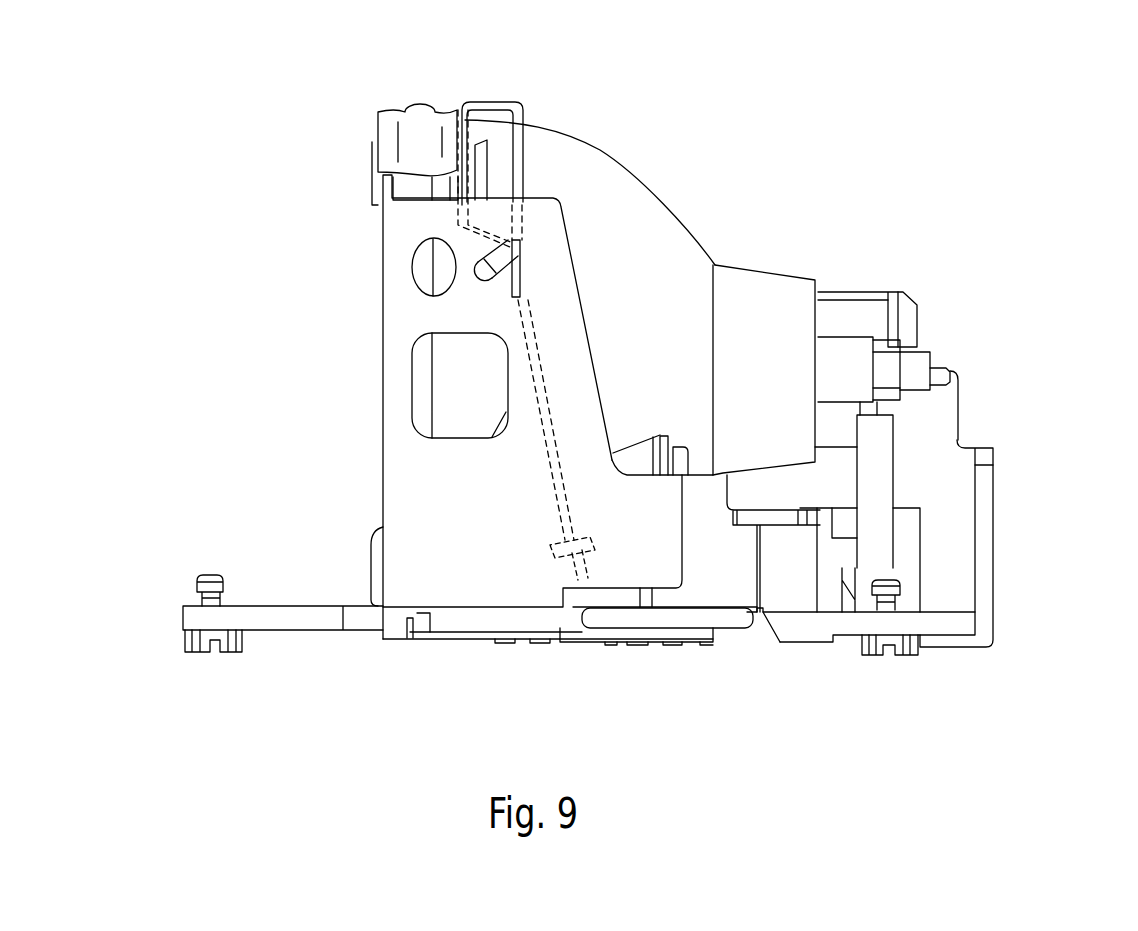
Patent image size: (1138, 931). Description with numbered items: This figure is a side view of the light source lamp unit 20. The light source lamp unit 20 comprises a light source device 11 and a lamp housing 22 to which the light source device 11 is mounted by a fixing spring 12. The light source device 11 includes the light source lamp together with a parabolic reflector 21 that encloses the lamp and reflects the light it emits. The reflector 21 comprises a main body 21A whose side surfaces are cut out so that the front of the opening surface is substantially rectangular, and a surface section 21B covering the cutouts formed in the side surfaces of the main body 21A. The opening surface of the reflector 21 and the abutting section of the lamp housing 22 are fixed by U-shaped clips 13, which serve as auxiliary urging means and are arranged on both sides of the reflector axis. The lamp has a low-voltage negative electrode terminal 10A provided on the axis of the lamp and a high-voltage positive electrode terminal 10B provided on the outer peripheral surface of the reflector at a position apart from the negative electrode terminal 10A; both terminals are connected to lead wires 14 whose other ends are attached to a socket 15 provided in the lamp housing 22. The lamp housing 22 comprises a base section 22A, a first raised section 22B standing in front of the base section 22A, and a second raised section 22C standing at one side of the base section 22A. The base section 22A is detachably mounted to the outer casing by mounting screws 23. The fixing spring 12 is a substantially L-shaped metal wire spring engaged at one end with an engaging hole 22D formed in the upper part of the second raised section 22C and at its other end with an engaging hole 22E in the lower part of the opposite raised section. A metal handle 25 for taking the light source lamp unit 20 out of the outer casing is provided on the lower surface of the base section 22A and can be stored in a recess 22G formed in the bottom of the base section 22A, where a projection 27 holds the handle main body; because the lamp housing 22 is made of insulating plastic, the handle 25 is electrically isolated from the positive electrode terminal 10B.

The light source lamp unit 20 is at (289, 66).
The light source device 11 is at (801, 167).
The reflector 21 is at (611, 157).
The main body 21A is at (657, 235).
The surface section 21B is at (447, 395).
The negative electrode terminal 10A is at (918, 372).
The positive electrode terminal 10B is at (681, 438).
The fixing spring 12 is at (493, 100).
The U-shaped clip 13 is at (418, 130).
The lead wire 14 is at (883, 478).
The socket 15 is at (850, 320).
The lamp housing 22 is at (400, 662).
The base section 22A is at (807, 637).
The first raised section 22B is at (383, 263).
The second raised section 22C is at (407, 507).
The engaging hole 22D is at (483, 250).
The engaging hole 22E is at (590, 527).
The recess 22G is at (717, 637).
The mounting screw 23 is at (197, 652).
The handle 25 is at (685, 618).
The projection 27 is at (758, 613).